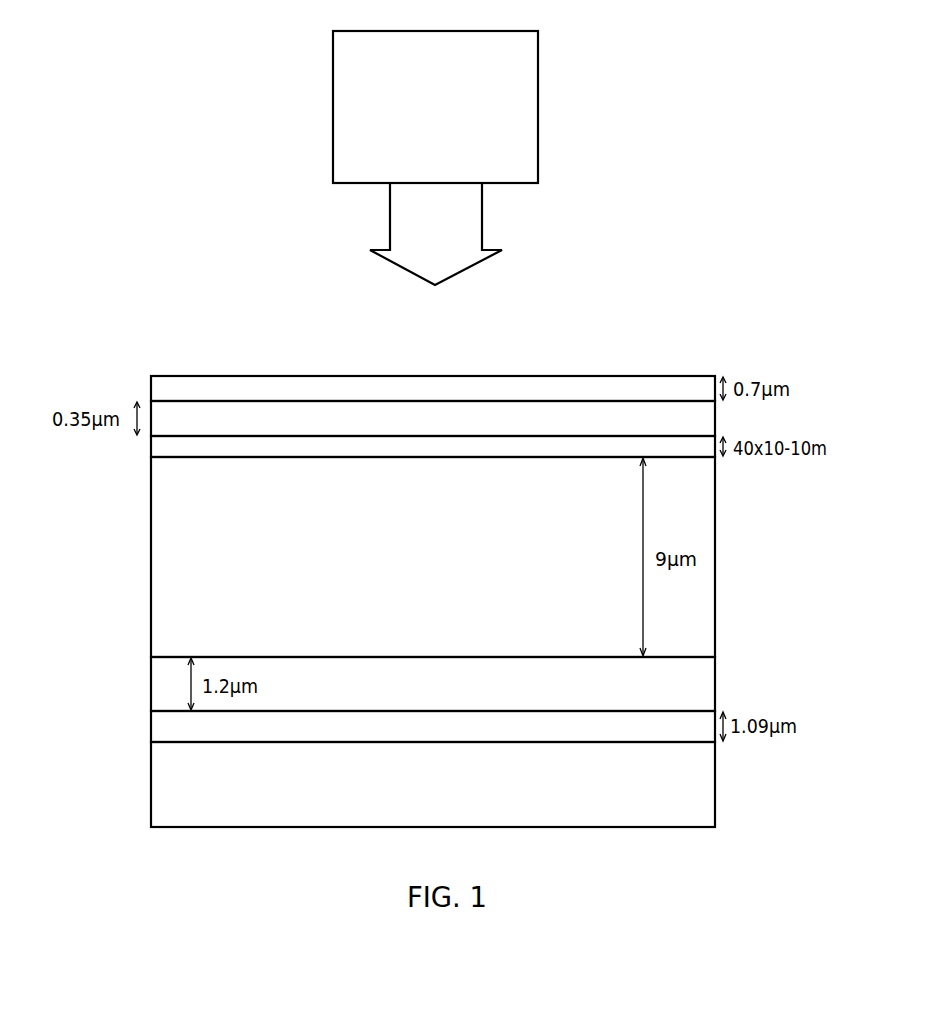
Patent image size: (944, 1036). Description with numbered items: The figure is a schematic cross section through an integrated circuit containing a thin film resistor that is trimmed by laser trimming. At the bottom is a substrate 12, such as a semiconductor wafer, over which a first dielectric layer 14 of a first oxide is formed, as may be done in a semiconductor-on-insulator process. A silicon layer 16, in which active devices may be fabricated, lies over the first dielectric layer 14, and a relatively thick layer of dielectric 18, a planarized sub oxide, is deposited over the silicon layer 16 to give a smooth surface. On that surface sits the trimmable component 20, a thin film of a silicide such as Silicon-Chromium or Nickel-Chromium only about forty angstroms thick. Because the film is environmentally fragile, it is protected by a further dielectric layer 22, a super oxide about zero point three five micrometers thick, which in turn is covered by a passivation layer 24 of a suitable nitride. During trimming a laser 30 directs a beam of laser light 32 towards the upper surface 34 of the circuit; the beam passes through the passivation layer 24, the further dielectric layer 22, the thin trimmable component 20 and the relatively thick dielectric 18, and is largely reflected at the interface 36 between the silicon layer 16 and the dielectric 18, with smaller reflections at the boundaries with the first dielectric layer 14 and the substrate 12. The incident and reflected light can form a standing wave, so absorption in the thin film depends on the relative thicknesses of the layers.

The substrate 12 is at (172, 810).
The first dielectric layer 14 is at (155, 728).
The silicon layer 16 is at (155, 680).
The relatively thick layer of dielectric 18 is at (155, 580).
The trimmable component 20 is at (150, 447).
The further dielectric layer 22 is at (716, 420).
The passivation layer 24 is at (181, 396).
The laser 30 is at (538, 100).
The beam of laser light 32 is at (483, 213).
The upper surface 34 is at (604, 375).
The interface 36 is at (695, 655).